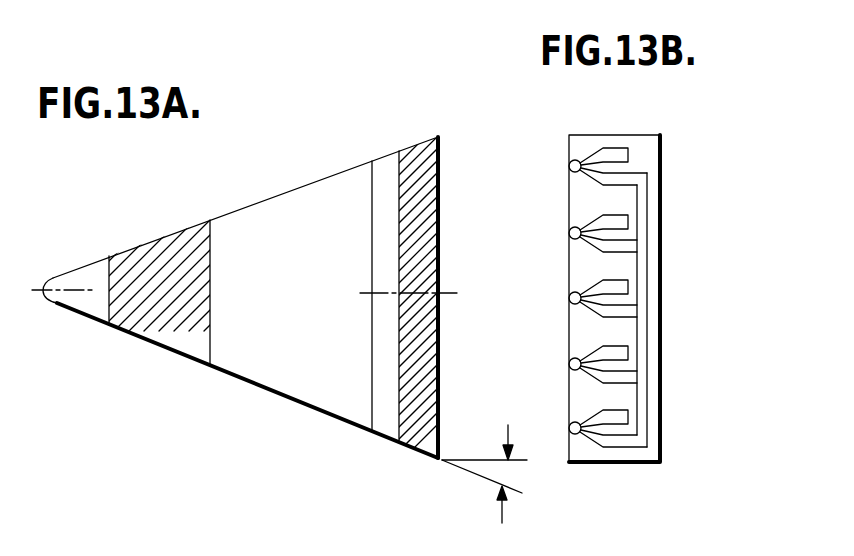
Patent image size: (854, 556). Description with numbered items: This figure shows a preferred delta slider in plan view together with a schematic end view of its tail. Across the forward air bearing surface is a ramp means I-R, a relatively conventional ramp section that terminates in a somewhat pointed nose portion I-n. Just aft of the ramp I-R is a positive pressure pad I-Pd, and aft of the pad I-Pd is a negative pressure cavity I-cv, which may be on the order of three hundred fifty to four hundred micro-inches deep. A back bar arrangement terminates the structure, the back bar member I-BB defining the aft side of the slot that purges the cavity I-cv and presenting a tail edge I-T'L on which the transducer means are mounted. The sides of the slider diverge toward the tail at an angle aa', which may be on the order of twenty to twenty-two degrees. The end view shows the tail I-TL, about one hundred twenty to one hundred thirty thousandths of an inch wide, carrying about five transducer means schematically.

In FIG. 13A, the nose portion I-n is at (47, 289).
In FIG. 13A, the ramp means I-R is at (90, 274).
In FIG. 13A, the positive pressure pad I-Pd is at (148, 248).
In FIG. 13A, the negative pressure cavity I-cv is at (315, 260).
In FIG. 13A, the back bar member I-BB is at (410, 150).
In FIG. 13A, the tail edge I-T'L is at (472, 297).
In FIG. 13A, the angle of divergence aa' is at (498, 474).
In FIG. 13B, the tail I-TL is at (582, 133).